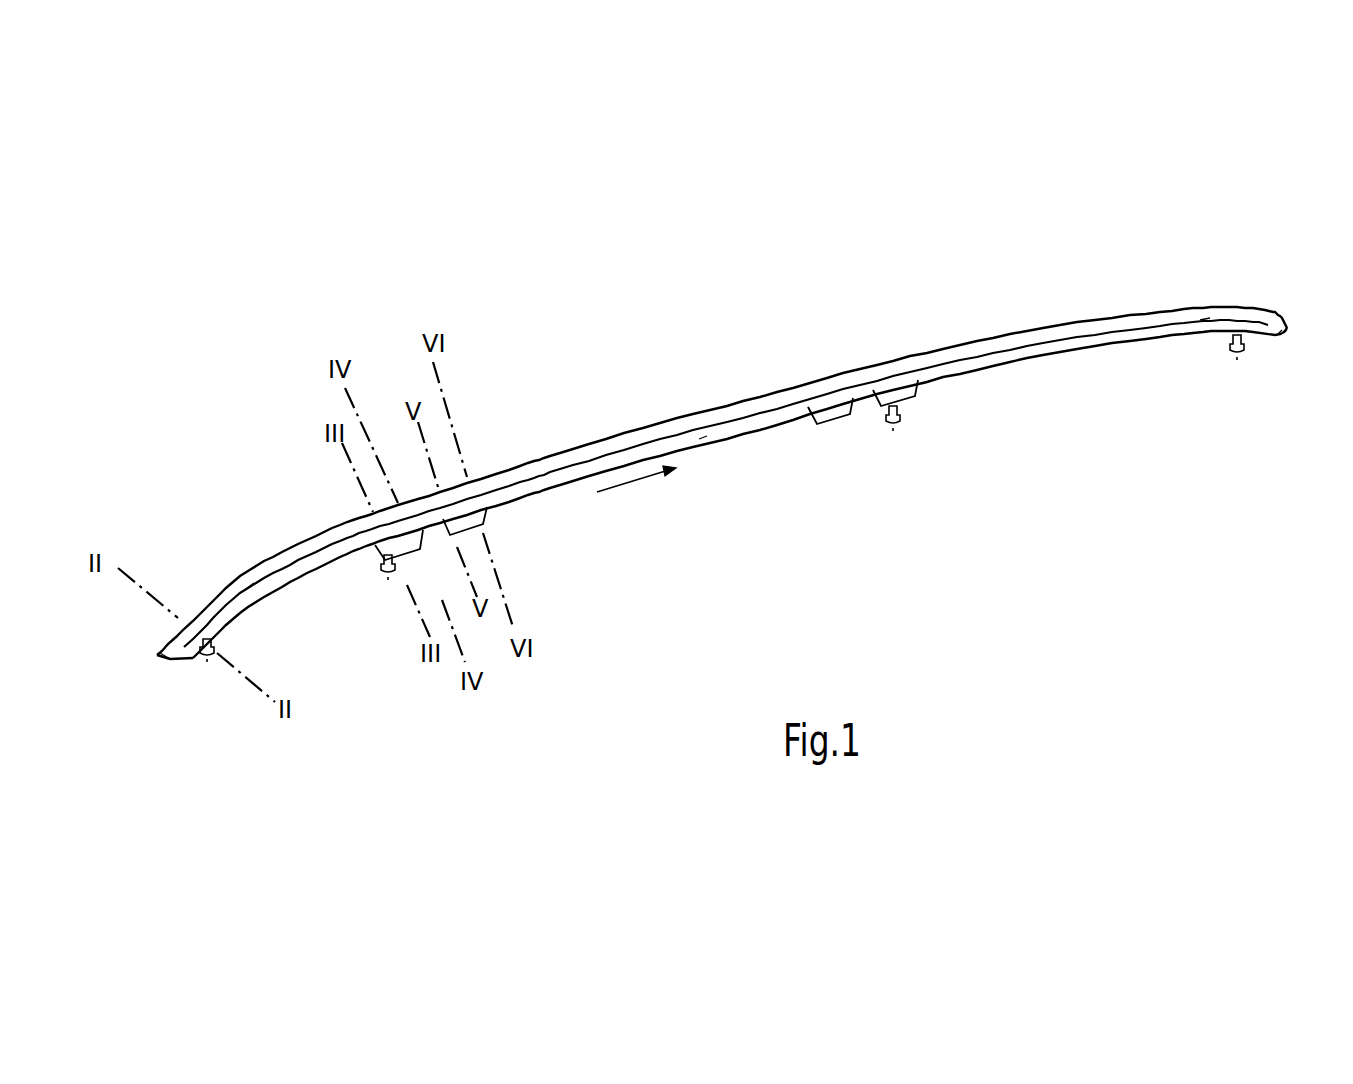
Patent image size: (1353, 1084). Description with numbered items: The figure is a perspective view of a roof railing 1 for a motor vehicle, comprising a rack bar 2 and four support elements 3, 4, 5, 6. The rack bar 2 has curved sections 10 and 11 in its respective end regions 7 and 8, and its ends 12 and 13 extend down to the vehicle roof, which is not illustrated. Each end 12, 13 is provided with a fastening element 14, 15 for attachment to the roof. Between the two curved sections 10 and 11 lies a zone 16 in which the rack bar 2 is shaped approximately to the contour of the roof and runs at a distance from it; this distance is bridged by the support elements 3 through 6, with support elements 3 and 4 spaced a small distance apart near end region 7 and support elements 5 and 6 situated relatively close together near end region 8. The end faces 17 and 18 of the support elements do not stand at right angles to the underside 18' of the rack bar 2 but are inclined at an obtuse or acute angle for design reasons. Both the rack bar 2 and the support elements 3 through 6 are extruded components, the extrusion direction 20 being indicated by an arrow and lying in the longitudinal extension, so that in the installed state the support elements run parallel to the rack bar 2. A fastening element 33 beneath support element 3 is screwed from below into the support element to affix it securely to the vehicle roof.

The roof railing 1 is at (650, 396).
The rack bar 2 is at (701, 413).
The support element 3 is at (378, 552).
The support element 4 is at (487, 521).
The support element 5 is at (832, 423).
The support element 6 is at (917, 403).
The end region 7 is at (240, 576).
The end region 8 is at (1200, 305).
The curved section 10 is at (252, 588).
The curved section 11 is at (1206, 318).
The end 12 is at (170, 665).
The end 13 is at (1278, 334).
The fastening element 14 is at (208, 661).
The fastening element 15 is at (1232, 358).
The zone 16 is at (800, 383).
The end face 17 is at (808, 416).
The end face 18 is at (889, 465).
The underside 18' is at (714, 528).
The extrusion direction 20 is at (633, 482).
The fastening element 33 is at (383, 583).